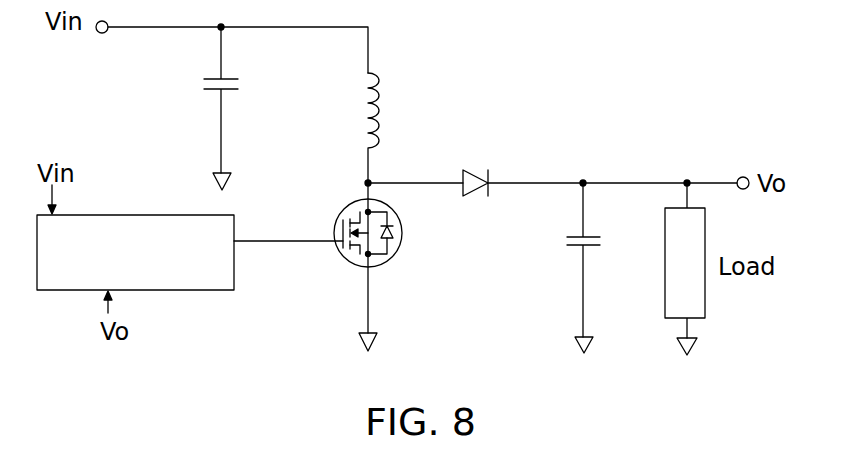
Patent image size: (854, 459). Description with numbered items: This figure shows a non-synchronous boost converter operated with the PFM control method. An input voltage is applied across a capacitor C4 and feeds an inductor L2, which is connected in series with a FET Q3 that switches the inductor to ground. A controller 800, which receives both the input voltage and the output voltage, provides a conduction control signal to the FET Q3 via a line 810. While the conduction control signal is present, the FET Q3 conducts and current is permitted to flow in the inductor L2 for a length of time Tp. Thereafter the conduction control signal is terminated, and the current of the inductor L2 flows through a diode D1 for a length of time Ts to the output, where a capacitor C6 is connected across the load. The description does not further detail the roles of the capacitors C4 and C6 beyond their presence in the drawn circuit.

The controller 800 is at (173, 215).
The line 810 is at (257, 241).
The input capacitor C4 is at (243, 108).
The inductor L2 is at (398, 128).
The FET Q3 is at (385, 267).
The diode D1 is at (480, 203).
The output capacitor C6 is at (597, 268).